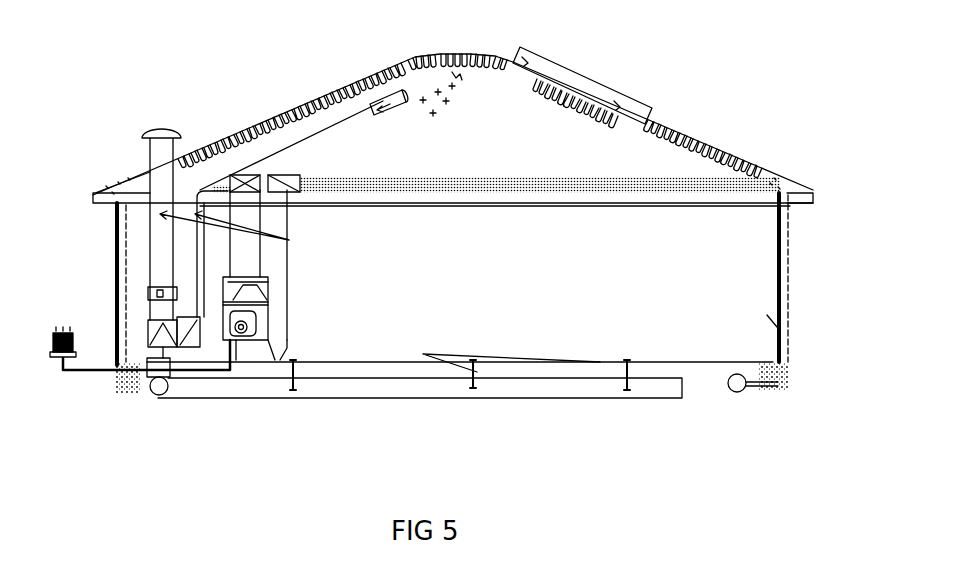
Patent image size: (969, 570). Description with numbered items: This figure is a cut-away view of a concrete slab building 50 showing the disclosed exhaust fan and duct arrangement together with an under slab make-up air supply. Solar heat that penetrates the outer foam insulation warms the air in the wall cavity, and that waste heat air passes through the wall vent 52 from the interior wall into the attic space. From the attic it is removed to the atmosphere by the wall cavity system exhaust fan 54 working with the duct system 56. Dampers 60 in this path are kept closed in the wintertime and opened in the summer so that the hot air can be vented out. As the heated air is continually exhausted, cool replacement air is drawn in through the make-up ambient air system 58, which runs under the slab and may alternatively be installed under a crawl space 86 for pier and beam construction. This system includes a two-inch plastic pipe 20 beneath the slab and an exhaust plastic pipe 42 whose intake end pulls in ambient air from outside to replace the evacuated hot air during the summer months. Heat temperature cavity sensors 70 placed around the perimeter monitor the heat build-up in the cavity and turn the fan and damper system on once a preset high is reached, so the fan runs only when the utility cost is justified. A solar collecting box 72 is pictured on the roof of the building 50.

The plastic pipe 20 is at (627, 380).
The exhaust plastic pipe 42 is at (732, 390).
The concrete slab building 50 is at (466, 281).
The wall vent 52 is at (112, 205).
The wall cavity system exhaust fan 54 is at (152, 120).
The duct system 56 is at (453, 102).
The make-up ambient air system 58 is at (445, 370).
The dampers 60 is at (188, 320).
The heat temperature cavity sensors 70 is at (434, 99).
The solar collecting box 72 is at (603, 97).
The crawl space 86 is at (257, 317).